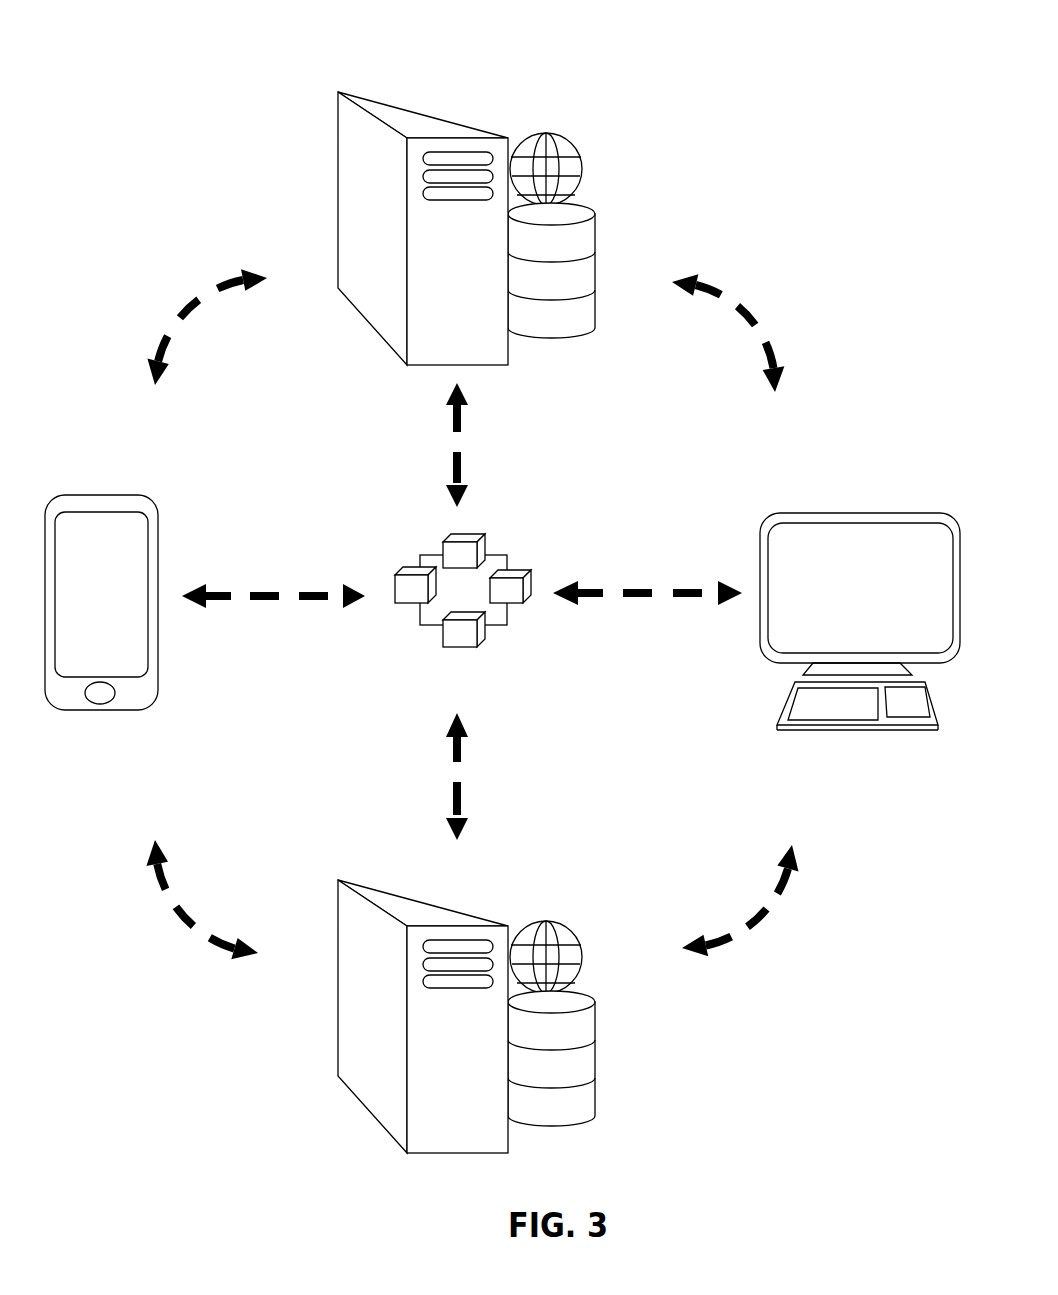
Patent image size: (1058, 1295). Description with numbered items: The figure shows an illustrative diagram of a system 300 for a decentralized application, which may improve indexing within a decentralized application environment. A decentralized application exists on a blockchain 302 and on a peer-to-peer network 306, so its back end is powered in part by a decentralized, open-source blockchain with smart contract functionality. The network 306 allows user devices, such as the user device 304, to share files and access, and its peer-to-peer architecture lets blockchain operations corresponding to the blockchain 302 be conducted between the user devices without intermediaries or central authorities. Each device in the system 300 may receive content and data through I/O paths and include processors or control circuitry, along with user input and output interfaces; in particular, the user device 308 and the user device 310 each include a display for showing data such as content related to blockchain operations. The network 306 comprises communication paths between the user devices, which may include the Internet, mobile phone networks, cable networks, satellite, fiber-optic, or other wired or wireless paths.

The system 300 is at (567, 36).
The blockchain 302 is at (508, 660).
The user device 304 is at (557, 370).
The network 306 is at (188, 283).
The user device 308 is at (140, 728).
The user device 310 is at (753, 683).